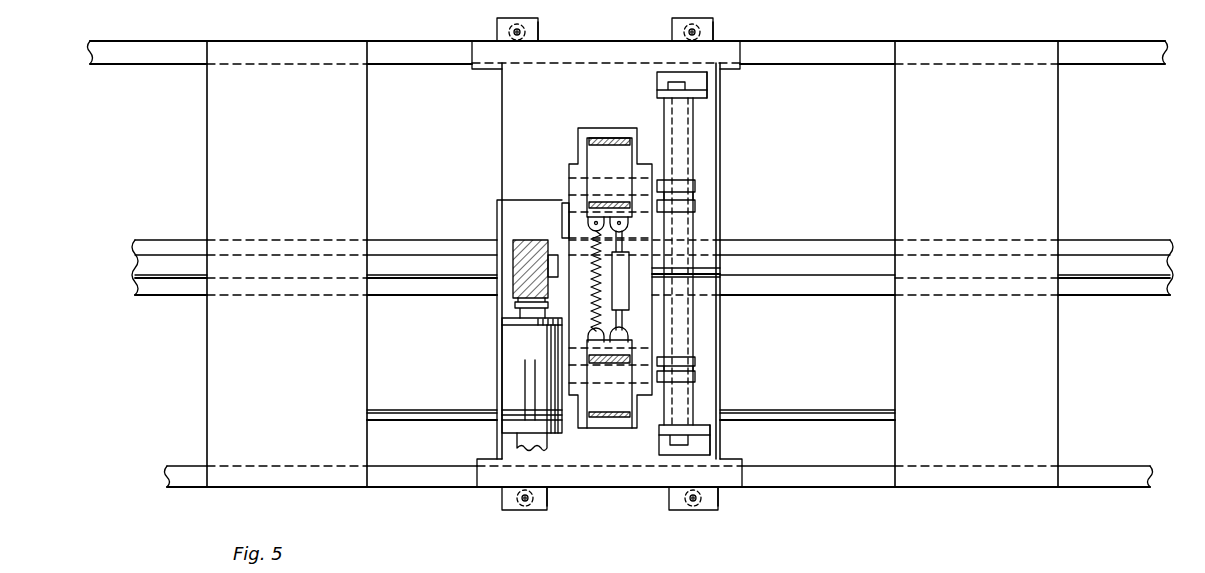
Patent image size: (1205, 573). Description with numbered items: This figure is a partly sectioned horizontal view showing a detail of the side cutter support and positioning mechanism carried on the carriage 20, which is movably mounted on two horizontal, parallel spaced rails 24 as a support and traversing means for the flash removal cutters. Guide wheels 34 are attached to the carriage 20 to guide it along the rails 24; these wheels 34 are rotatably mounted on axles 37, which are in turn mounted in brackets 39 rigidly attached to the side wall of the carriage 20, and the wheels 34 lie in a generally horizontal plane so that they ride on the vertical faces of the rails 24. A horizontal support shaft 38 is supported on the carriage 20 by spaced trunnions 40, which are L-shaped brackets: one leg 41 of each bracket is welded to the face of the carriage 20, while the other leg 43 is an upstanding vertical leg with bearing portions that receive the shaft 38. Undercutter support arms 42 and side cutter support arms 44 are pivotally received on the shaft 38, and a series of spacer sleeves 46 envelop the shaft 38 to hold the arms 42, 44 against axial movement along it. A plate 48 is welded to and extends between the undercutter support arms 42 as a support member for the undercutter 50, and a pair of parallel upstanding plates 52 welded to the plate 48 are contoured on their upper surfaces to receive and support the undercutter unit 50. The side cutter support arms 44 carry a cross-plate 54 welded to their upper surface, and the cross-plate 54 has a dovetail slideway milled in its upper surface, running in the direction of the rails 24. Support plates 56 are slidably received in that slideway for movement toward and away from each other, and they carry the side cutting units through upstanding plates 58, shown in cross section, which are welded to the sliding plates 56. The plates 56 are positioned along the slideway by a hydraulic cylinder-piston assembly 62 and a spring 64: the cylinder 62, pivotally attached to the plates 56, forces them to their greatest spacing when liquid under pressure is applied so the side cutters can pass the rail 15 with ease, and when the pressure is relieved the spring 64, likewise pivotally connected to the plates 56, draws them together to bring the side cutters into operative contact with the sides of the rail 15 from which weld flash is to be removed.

The rail 15 is at (333, 294).
The carriage 20 is at (720, 168).
The rails 24 is at (858, 48).
The guide wheels 34 is at (538, 27).
The axles 37 is at (497, 33).
The horizontal support shaft 38 is at (695, 150).
The brackets 39 is at (538, 36).
The trunnions 40 is at (709, 100).
The leg 41 is at (657, 78).
The undercutter support arms 42 is at (695, 210).
The leg 43 is at (713, 95).
The side cutter support arms 44 is at (695, 185).
The spacer sleeves 46 is at (663, 115).
The plate 48 is at (505, 207).
The undercutter 50 is at (510, 360).
The upstanding plates 52 is at (505, 325).
The cross-plate 54 is at (720, 268).
The support plates 56 is at (580, 133).
The upstanding plates 58 is at (597, 130).
The cylinder 62 is at (619, 285).
The spring 64 is at (595, 250).